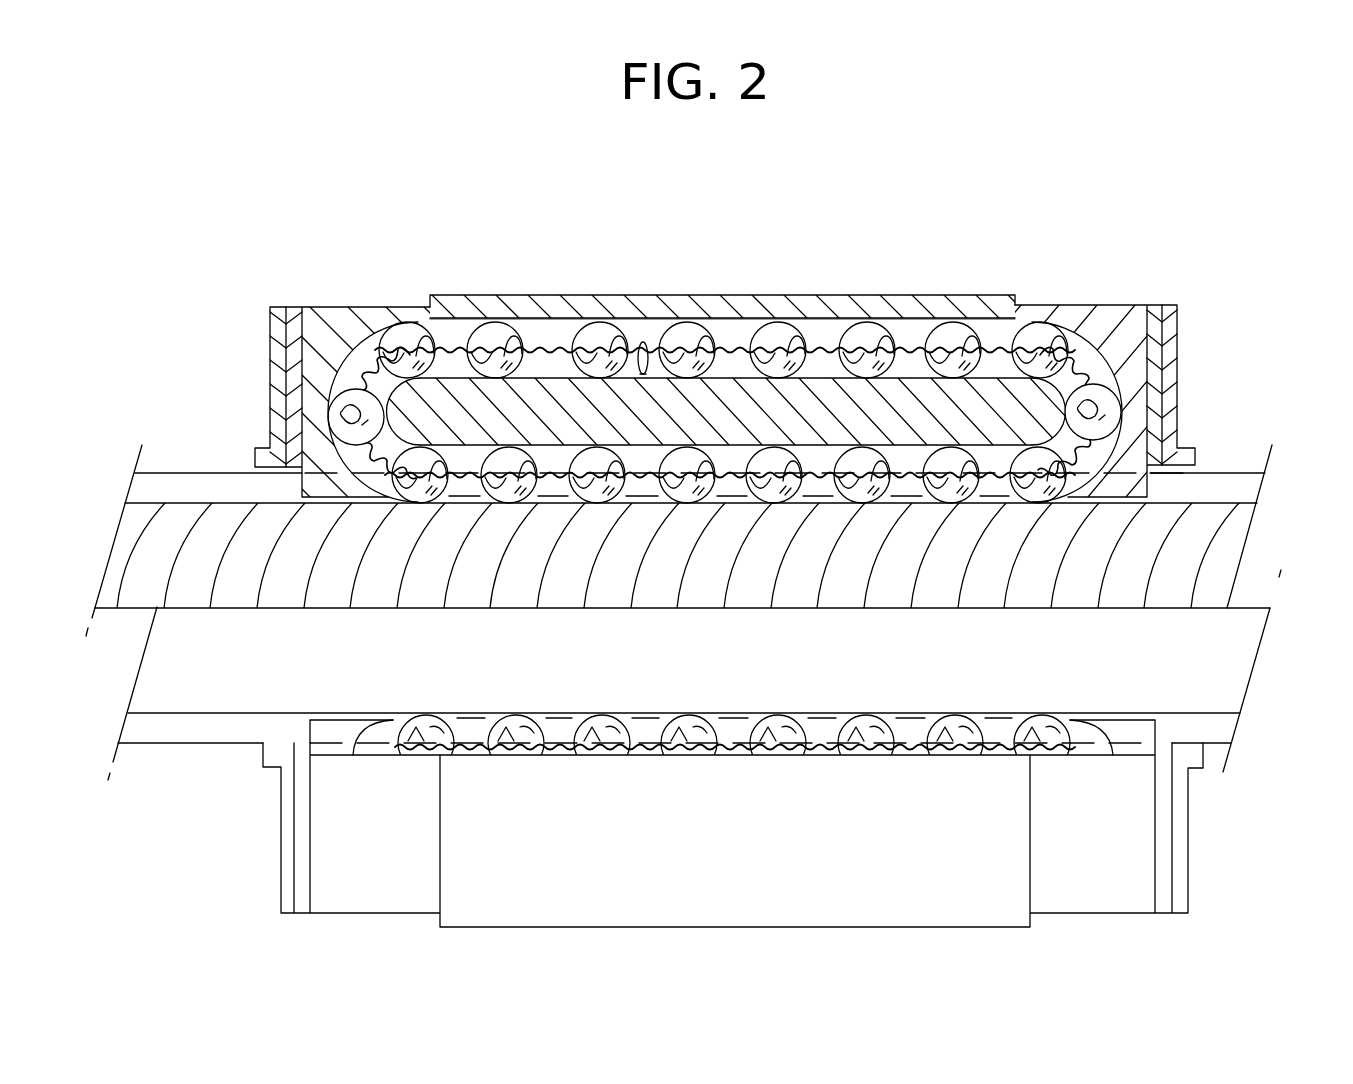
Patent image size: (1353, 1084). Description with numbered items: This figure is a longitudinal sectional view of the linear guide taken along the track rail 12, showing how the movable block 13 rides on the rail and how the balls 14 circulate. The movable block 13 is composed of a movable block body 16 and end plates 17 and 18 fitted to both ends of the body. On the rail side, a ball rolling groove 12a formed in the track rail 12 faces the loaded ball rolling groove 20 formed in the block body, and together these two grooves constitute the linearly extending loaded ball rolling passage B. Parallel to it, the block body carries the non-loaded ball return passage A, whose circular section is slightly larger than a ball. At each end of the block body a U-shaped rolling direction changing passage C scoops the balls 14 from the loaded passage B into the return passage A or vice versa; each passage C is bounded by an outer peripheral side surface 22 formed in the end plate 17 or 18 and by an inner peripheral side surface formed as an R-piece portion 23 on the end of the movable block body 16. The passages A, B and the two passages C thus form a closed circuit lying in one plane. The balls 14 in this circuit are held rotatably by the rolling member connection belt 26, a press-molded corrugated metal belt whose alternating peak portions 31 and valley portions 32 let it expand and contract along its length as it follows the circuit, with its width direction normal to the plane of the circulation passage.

The track rail 12 is at (1245, 474).
The ball rolling groove 12a is at (1197, 473).
The movable block 13 is at (799, 289).
The balls 14 is at (593, 327).
The movable block body 16 is at (888, 298).
The end plate 17 is at (313, 313).
The end plate 18 is at (1095, 312).
The loaded ball rolling groove 20 is at (470, 452).
The outer peripheral side surface 22 is at (362, 345).
The R-piece portion 23 is at (393, 390).
The rolling member connection belt 26 is at (737, 337).
The peak portion 31 is at (650, 352).
The valley portion 32 is at (644, 374).
The ball return passage A is at (827, 330).
The loaded ball rolling passage B is at (903, 457).
The direction changing passage C is at (347, 377).